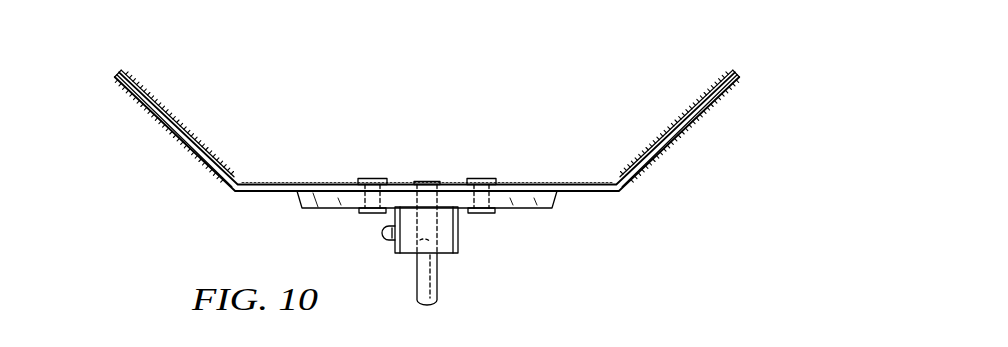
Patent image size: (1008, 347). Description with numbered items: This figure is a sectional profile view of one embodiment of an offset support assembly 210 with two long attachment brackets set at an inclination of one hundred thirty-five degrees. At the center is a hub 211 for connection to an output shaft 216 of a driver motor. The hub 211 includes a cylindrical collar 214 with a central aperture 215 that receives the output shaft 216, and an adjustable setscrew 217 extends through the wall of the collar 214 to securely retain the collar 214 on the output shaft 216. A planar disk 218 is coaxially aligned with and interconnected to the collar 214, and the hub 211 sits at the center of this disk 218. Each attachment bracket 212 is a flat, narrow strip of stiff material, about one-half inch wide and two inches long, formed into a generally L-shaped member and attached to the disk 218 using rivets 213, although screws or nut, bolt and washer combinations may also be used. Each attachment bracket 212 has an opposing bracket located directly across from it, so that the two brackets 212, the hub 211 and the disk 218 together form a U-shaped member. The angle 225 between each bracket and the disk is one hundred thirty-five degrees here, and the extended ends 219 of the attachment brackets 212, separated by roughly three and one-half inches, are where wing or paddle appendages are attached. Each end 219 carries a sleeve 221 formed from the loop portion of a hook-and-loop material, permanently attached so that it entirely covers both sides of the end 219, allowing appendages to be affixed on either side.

The offset support assembly 210 is at (375, 49).
The hub 211 is at (428, 182).
The attachment bracket 212 is at (245, 193).
The rivets 213 is at (373, 179).
The cylindrical collar 214 is at (460, 233).
The central aperture 215 is at (425, 238).
The output shaft 216 is at (438, 277).
The adjustable setscrew 217 is at (384, 234).
The planar disk 218 is at (548, 210).
The ends of the attachment brackets 219 is at (120, 69).
The sleeve 221 is at (168, 133).
The angle of inclination 225 is at (240, 181).